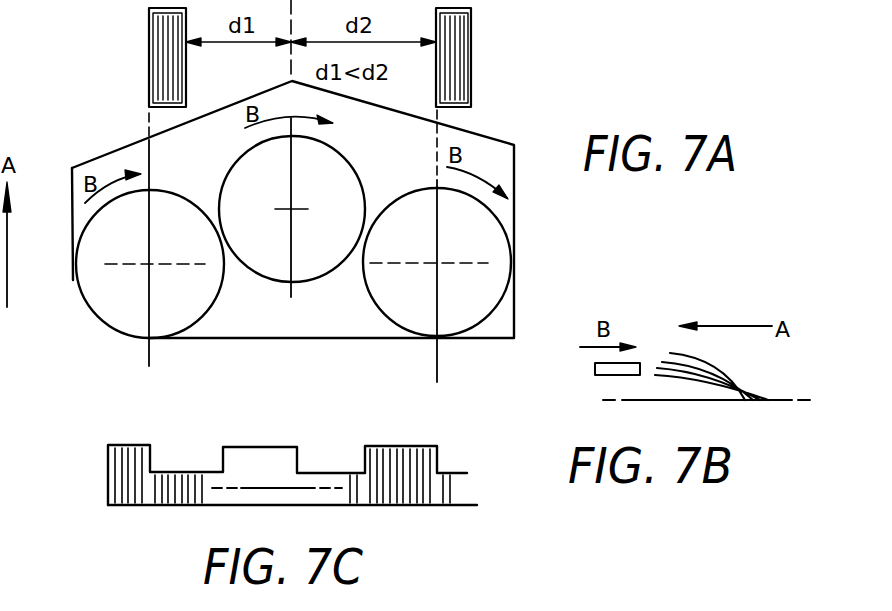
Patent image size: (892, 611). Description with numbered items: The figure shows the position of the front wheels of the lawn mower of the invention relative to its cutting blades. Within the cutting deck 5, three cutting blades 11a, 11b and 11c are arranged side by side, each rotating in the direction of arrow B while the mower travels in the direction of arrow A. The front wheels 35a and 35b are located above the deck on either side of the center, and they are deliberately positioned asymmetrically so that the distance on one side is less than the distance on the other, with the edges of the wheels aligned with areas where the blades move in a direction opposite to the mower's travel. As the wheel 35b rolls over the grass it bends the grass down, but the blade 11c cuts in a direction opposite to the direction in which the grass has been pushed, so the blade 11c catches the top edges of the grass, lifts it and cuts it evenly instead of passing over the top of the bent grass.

In FIG. 7A, the cutting deck 5 is at (488, 158).
In FIG. 7A, the cutting blade 11a is at (98, 287).
In FIG. 7A, the cutting blade 11b is at (263, 268).
In FIG. 7A, the cutting blade 11c is at (393, 303).
In FIG. 7B, the cutting blade 11c is at (596, 367).
In FIG. 7A, the front wheel 35a is at (158, 42).
In FIG. 7A, the front wheel 35b is at (455, 42).